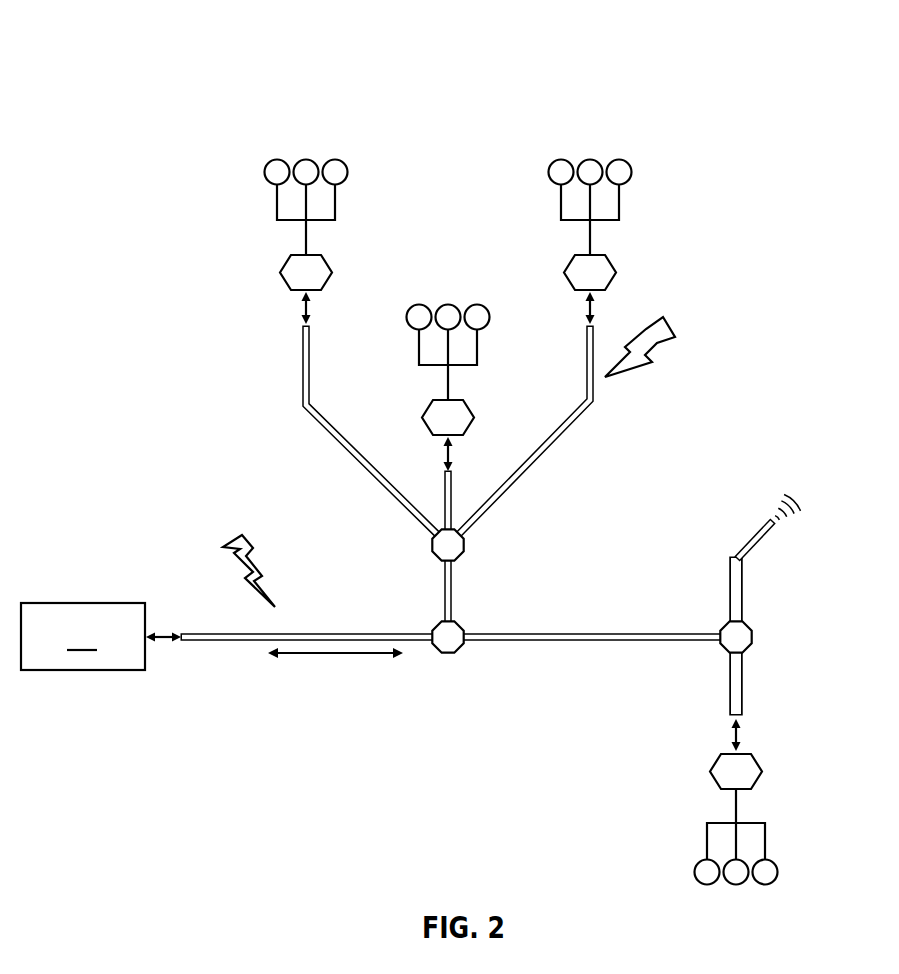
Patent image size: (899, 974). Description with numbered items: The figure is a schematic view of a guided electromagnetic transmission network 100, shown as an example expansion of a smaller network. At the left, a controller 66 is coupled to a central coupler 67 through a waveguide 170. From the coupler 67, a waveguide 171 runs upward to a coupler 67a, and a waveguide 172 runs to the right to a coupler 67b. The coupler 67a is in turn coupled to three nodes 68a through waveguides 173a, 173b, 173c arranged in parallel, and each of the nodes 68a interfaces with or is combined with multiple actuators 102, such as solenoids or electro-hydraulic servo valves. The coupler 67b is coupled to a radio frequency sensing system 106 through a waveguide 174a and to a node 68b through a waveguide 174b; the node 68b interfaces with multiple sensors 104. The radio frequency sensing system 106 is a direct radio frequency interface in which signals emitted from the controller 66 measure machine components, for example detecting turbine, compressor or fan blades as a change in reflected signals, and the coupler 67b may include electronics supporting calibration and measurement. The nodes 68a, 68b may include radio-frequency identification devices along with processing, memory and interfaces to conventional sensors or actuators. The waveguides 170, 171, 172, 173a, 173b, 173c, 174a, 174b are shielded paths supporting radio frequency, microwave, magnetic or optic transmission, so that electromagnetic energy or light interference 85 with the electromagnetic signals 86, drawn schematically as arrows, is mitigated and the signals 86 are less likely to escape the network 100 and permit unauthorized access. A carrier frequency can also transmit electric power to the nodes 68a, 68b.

The guided electromagnetic transmission network 100 is at (176, 51).
The actuators 102 is at (335, 159).
The sensors 104 is at (777, 870).
The radio frequency sensing system 106 is at (750, 541).
The controller 66 is at (101, 636).
The coupler 67 is at (447, 655).
The coupler 67a is at (460, 557).
The coupler 67b is at (753, 634).
The nodes 68a is at (322, 258).
The node 68b is at (755, 758).
The electromagnetic energy or light interference 85 is at (250, 540).
The electromagnetic signals 86 is at (335, 657).
The waveguide 170 is at (222, 641).
The waveguide 171 is at (444, 588).
The waveguide 172 is at (568, 643).
The waveguide 173a is at (302, 365).
The waveguide 173b is at (444, 502).
The waveguide 173c is at (530, 470).
The waveguide 174a is at (728, 585).
The waveguide 174b is at (728, 685).